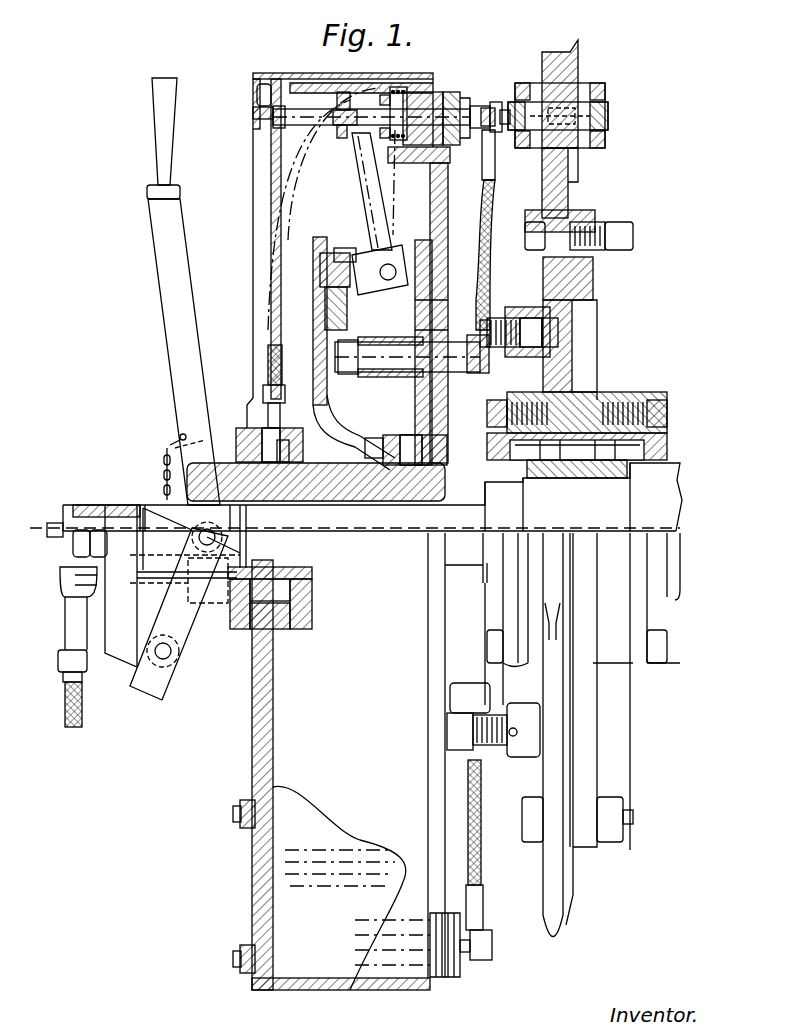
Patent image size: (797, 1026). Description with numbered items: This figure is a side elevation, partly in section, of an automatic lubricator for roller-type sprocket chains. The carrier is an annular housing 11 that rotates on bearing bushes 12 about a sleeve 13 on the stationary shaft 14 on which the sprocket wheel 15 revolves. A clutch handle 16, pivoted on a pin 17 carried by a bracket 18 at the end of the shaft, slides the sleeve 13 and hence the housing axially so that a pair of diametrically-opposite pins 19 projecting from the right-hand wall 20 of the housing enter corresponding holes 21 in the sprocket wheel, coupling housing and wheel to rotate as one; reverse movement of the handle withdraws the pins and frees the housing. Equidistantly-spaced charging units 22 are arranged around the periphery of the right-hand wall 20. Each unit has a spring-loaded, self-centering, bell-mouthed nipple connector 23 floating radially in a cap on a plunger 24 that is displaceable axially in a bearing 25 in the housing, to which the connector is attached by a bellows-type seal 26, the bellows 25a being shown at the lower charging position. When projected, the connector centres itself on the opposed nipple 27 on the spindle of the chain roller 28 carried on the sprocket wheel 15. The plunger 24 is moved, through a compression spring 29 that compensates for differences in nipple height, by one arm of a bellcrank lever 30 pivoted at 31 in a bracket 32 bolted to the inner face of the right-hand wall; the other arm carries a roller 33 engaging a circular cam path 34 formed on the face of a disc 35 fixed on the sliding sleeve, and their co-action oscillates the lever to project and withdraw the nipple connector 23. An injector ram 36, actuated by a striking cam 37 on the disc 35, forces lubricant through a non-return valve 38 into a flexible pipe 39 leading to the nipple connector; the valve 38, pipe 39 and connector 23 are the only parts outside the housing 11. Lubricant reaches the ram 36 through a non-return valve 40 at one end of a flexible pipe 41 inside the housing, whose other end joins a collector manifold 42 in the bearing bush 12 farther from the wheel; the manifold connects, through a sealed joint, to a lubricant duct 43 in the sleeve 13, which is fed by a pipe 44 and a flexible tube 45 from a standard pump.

The annular housing 11 is at (300, 74).
The bearing bushes 12 is at (292, 428).
The sleeve 13 is at (345, 485).
The stationary shaft 14 is at (413, 514).
The sprocket wheel 15 is at (597, 293).
The clutch handle 16 is at (175, 305).
The pin 17 is at (172, 654).
The bracket 18 is at (100, 612).
The pins 19 is at (560, 338).
The right-hand wall 20 is at (433, 396).
The holes 21 is at (560, 325).
The charging units 22 is at (502, 106).
The nipple connector 23 is at (480, 106).
The plunger 24 is at (440, 93).
The bearing 25 is at (404, 98).
The bellows 25a is at (455, 975).
The bellows-type seal 26 is at (458, 95).
The nipple 27 is at (497, 133).
The chain roller 28 is at (576, 73).
The compression spring 29 is at (395, 96).
The bellcrank lever 30 is at (360, 188).
The pivot 31 is at (396, 270).
The bracket 32 is at (383, 292).
The roller 33 is at (360, 245).
The cam path 34 is at (340, 310).
The disc 35 is at (313, 316).
The injector ram 36 is at (402, 365).
The striking cam 37 is at (327, 368).
The non-return valve 38 is at (490, 358).
The flexible pipe 39 is at (490, 222).
The non-return valve 40 is at (402, 347).
The flexible pipe 41 is at (410, 188).
The collector manifold 42 is at (283, 465).
The lubricant duct 43 is at (258, 580).
The pipe 44 is at (70, 568).
The flexible tube 45 is at (84, 714).